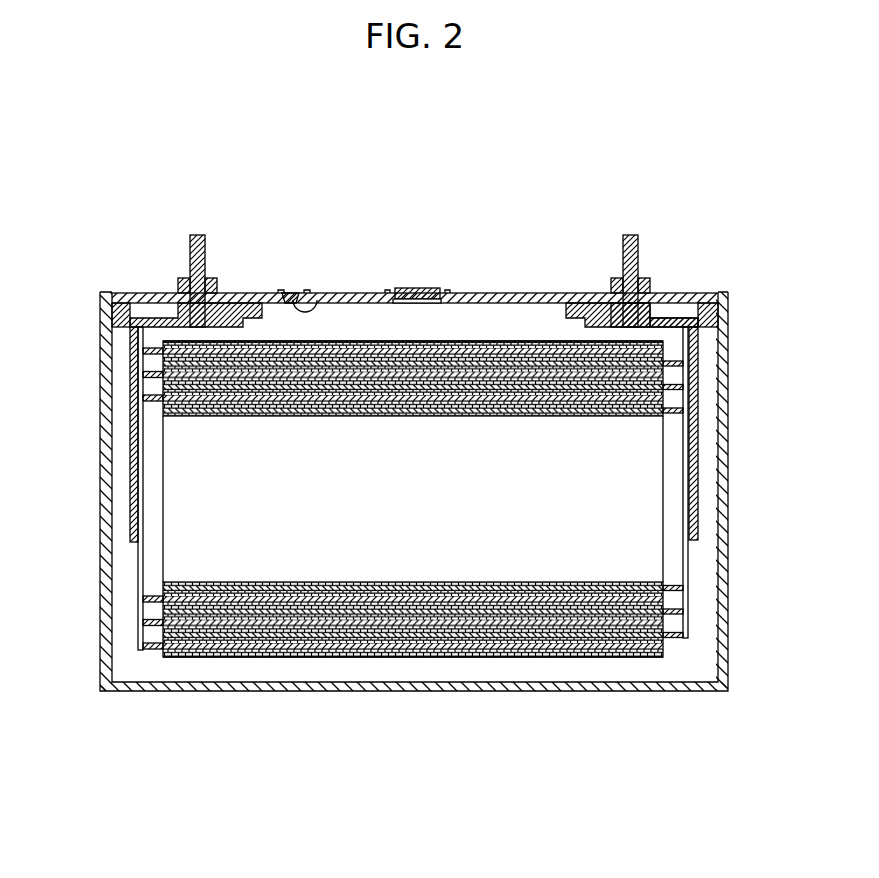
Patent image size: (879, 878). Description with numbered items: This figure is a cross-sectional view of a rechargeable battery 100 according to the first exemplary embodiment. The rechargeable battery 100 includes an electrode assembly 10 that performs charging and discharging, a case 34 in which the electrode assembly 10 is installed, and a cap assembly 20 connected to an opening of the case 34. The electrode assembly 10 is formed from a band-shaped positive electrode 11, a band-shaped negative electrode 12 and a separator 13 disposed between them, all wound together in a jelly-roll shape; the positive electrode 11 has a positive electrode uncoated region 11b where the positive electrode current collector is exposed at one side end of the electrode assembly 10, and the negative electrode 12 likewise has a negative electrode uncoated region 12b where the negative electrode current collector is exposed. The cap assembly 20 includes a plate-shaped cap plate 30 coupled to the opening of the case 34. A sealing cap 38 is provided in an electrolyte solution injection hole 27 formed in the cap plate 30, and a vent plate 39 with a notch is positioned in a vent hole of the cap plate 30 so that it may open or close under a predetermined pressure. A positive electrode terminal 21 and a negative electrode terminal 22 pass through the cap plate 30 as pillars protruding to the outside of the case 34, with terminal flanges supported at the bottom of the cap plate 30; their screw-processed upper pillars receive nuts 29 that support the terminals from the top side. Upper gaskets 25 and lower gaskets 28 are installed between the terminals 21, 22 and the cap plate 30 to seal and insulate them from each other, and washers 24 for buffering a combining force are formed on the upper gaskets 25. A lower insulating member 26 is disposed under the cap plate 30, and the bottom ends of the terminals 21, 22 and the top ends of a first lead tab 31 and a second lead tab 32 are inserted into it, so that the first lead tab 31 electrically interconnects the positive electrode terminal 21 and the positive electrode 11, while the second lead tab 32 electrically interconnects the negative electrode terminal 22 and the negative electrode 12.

The rechargeable battery 100 is at (430, 184).
The electrode assembly 10 is at (522, 548).
The positive electrode 11 is at (255, 657).
The positive electrode uncoated region 11b is at (145, 652).
The negative electrode 12 is at (300, 640).
The negative electrode uncoated region 12b is at (686, 641).
The separator 13 is at (407, 657).
The cap assembly 20 is at (263, 293).
The positive electrode terminal 21 is at (207, 247).
The negative electrode terminal 22 is at (623, 245).
The washer 24 is at (611, 292).
The upper gasket 25 is at (645, 296).
The lower insulating member 26 is at (118, 312).
The electrolyte solution injection hole 27 is at (316, 298).
The lower gasket 28 is at (655, 293).
The nut 29 is at (185, 280).
The cap plate 30 is at (461, 293).
The first lead tab 31 is at (131, 469).
The second lead tab 32 is at (699, 472).
The case 34 is at (728, 432).
The sealing cap 38 is at (289, 292).
The vent plate 39 is at (416, 290).